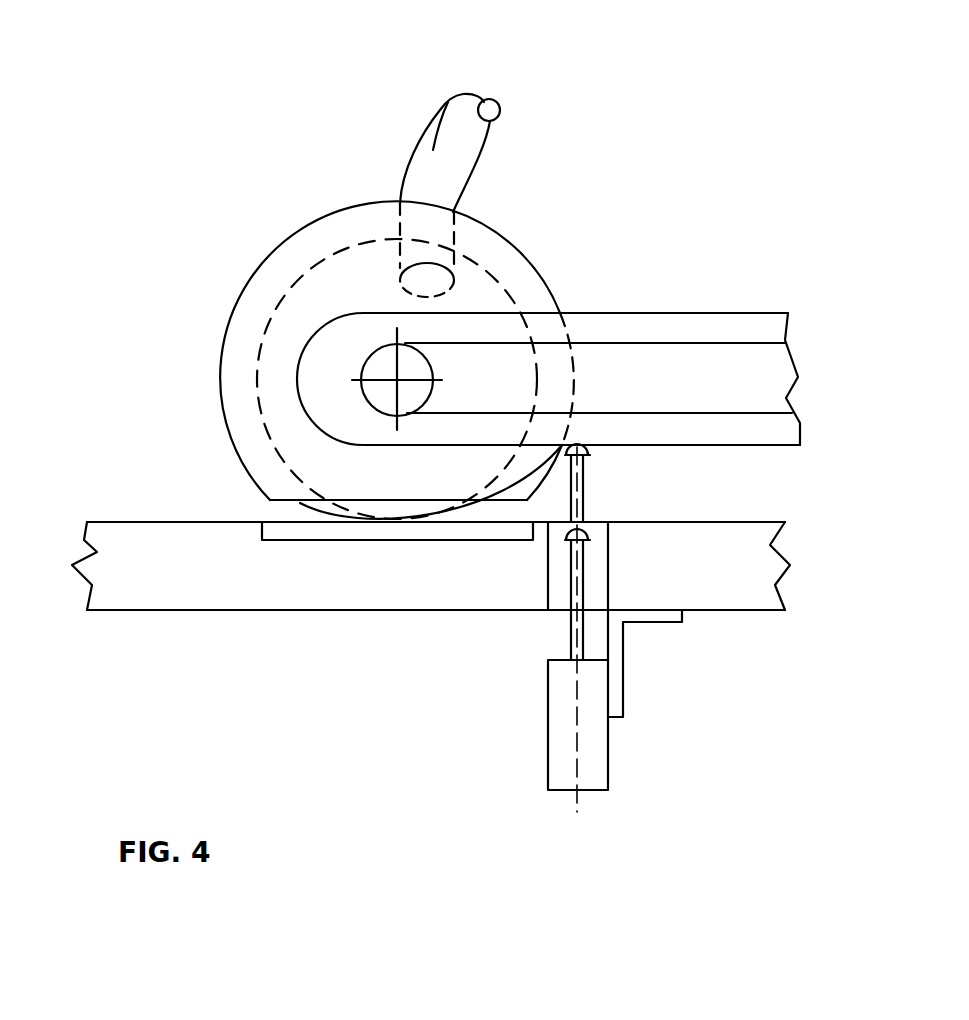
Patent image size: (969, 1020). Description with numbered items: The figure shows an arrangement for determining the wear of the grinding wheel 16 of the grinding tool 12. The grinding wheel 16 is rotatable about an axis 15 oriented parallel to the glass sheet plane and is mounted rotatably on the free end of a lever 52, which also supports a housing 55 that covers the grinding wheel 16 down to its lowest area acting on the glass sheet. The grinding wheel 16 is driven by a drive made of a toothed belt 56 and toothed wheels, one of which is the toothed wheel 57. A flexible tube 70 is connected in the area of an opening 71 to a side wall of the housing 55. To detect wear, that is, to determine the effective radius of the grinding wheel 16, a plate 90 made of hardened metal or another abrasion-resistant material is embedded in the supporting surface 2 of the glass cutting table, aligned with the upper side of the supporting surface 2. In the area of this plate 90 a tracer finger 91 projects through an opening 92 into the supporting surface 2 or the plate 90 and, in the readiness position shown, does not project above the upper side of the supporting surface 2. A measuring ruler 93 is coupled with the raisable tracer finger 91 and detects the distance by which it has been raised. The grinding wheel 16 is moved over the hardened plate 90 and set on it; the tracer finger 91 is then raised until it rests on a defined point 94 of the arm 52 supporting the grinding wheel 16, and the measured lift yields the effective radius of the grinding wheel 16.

The supporting surface 2 is at (153, 568).
The grinding tool 12 is at (202, 377).
The axis 15 is at (395, 393).
The grinding wheel 16 is at (357, 502).
The lever 52 is at (720, 322).
The housing 55 is at (252, 275).
The toothed belt 56 is at (758, 343).
The toothed wheel 57 is at (417, 360).
The flexible tube 70 is at (445, 96).
The opening 71 is at (422, 278).
The plate 90 is at (278, 528).
The tracer finger 91 is at (573, 578).
The opening 92 is at (598, 543).
The measuring ruler 93 is at (558, 725).
The defined point 94 is at (583, 440).